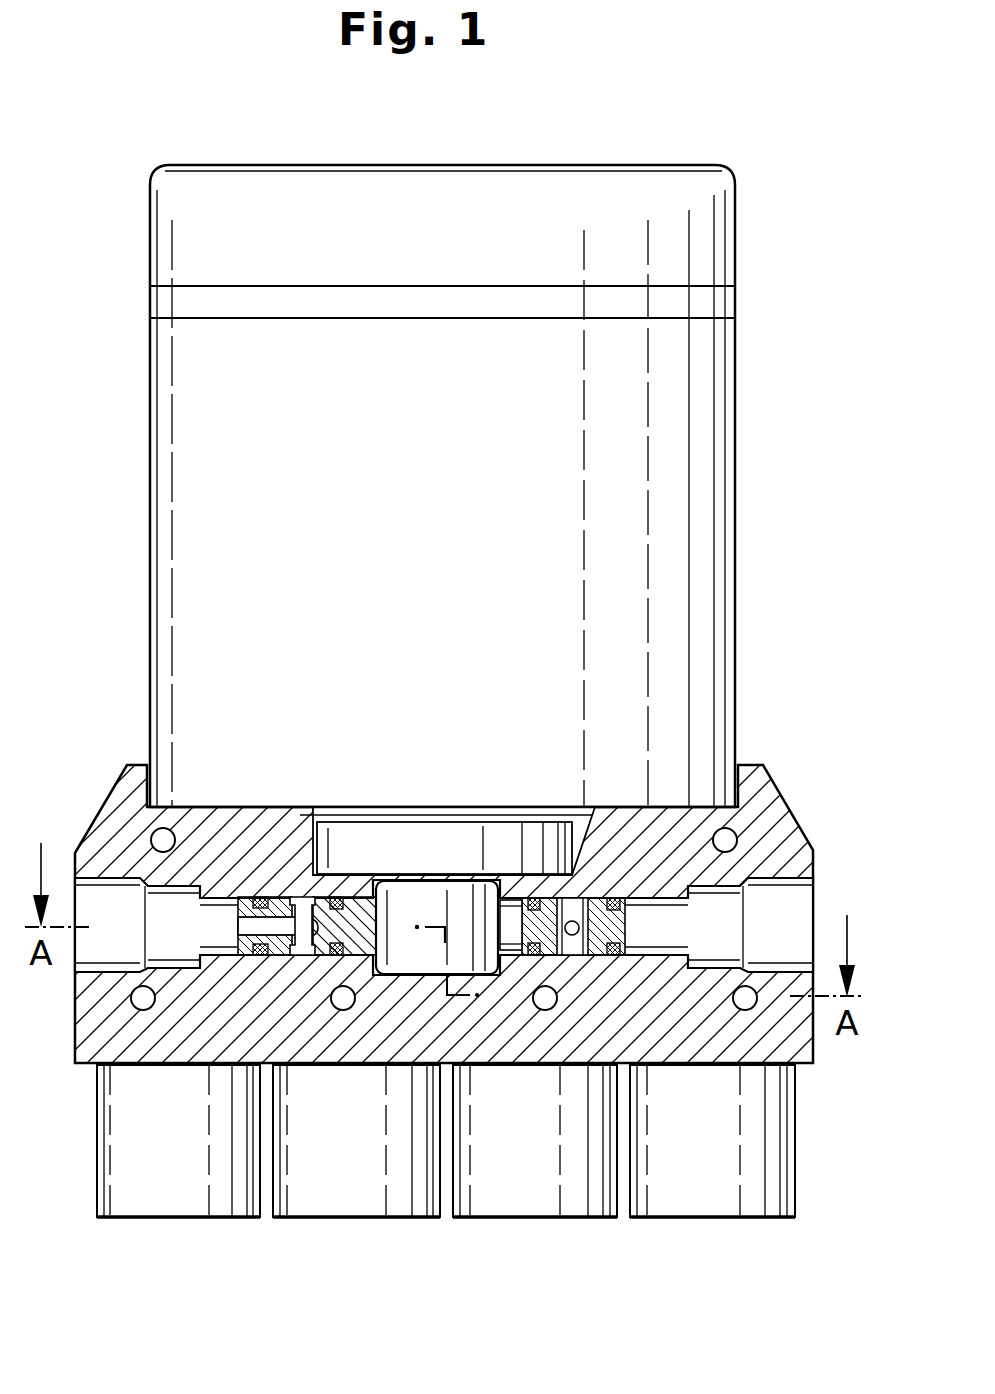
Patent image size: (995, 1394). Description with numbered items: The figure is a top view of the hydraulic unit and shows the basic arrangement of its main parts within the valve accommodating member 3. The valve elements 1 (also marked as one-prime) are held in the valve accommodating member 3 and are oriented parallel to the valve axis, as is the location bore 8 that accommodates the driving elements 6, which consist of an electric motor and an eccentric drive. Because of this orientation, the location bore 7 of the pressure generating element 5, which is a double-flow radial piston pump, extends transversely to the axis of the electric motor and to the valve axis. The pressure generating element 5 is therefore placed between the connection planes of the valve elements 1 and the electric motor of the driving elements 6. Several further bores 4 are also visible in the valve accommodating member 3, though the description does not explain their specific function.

The valve elements 1 is at (202, 1193).
The valve accommodating member 3 is at (777, 823).
The fastening bores 4 is at (543, 1010).
The pressure generating element 5 is at (246, 908).
The driving elements 6 is at (423, 785).
The location bore 7 is at (300, 893).
The location bore 8 is at (512, 893).